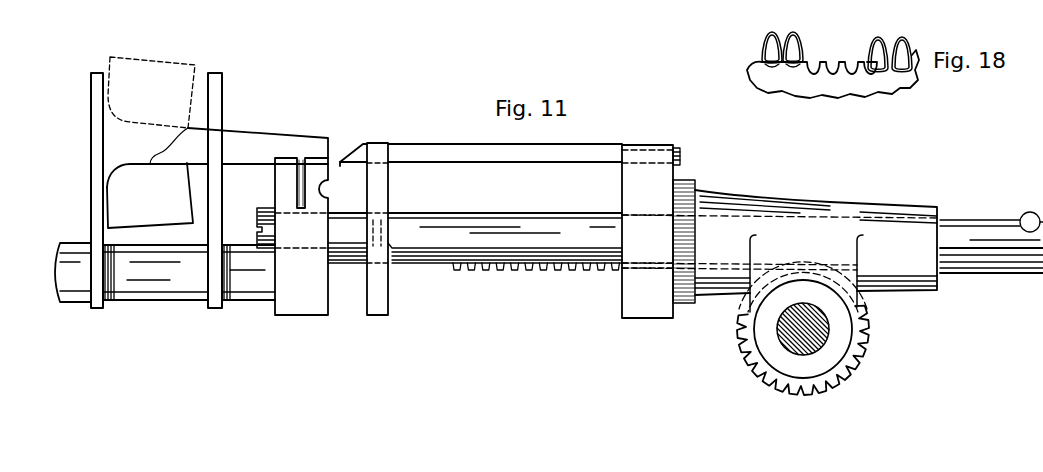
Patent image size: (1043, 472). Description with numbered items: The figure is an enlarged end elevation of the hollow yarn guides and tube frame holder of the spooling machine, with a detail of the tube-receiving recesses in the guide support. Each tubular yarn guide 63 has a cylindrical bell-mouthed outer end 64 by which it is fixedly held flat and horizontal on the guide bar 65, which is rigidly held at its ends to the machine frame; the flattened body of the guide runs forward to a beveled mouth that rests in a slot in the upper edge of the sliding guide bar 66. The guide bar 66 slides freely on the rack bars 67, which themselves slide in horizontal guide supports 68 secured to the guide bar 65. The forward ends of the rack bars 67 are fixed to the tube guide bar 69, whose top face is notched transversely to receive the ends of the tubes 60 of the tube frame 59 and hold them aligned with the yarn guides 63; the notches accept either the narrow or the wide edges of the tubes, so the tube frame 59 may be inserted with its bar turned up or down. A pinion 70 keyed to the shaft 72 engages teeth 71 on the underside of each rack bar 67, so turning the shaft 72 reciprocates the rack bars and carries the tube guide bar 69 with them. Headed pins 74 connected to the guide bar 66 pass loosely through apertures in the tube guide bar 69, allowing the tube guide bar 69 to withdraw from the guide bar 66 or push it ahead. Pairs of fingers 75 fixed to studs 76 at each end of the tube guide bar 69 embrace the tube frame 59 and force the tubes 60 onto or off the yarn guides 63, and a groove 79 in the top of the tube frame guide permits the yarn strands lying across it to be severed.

In FIG. 11, the tube frame 59 is at (137, 192).
In FIG. 11, the tubes 60 is at (257, 144).
In FIG. 18, the tubes 60 is at (795, 38).
In FIG. 11, the tubular yarn guides 63 is at (452, 152).
In FIG. 11, the bell-mouthed outer end 64 is at (680, 157).
In FIG. 11, the guide bar 65 is at (652, 310).
In FIG. 11, the sliding guide bar 66 is at (380, 185).
In FIG. 11, the rack bars 67 is at (407, 267).
In FIG. 11, the guide supports 68 is at (903, 287).
In FIG. 11, the tube guide bar 69 is at (313, 307).
In FIG. 18, the tube guide bar 69 is at (878, 78).
In FIG. 11, the pinion 70 is at (851, 347).
In FIG. 11, the teeth 71 is at (547, 265).
In FIG. 11, the shaft 72 is at (828, 305).
In FIG. 11, the headed pins 74 is at (256, 227).
In FIG. 11, the fingers 75 is at (97, 308).
In FIG. 11, the studs 76 is at (193, 290).
In FIG. 11, the groove 79 is at (307, 180).